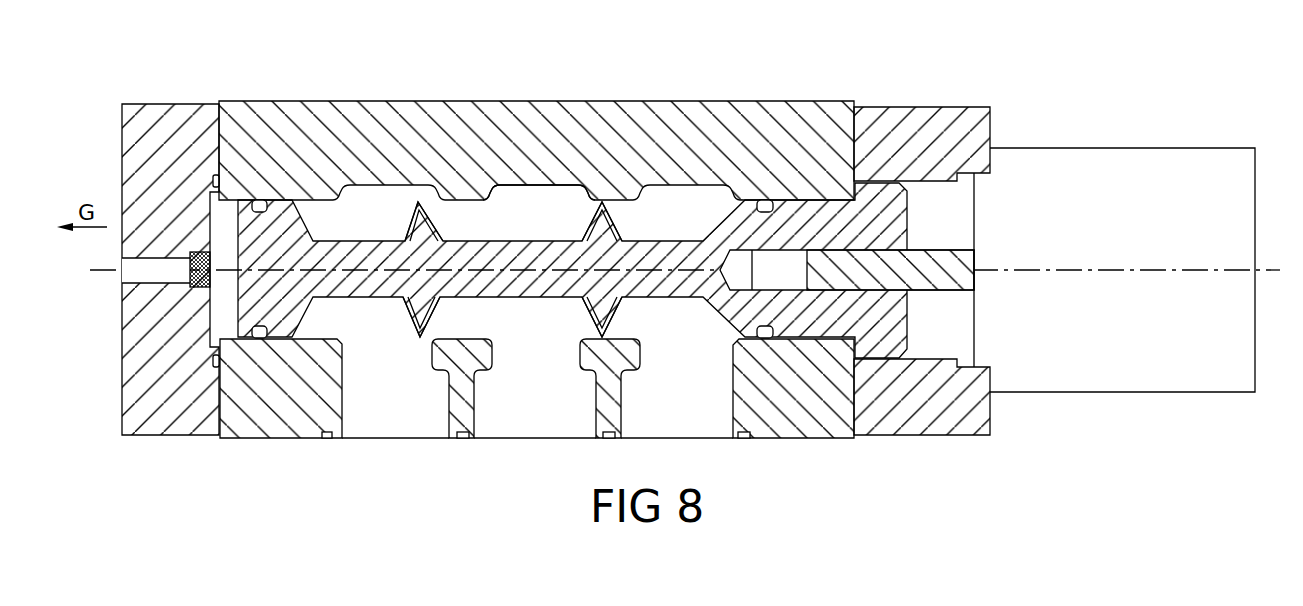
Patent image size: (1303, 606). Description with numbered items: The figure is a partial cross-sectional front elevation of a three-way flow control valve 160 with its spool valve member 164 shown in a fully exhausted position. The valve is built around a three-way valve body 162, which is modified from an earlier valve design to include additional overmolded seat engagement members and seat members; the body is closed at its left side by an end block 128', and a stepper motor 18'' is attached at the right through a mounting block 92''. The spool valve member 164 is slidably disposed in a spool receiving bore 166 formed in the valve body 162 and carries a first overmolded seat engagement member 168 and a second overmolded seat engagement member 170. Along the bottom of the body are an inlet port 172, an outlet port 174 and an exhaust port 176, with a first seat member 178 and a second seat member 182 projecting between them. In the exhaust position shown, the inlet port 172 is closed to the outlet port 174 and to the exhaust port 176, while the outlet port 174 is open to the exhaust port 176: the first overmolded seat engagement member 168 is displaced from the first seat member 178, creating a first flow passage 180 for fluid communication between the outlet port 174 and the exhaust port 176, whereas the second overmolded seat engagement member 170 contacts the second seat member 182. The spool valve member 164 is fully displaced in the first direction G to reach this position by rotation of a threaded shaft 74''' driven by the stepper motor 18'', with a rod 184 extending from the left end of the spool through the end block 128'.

The flow control valve 160 is at (975, 86).
The end block / housing end 128' is at (158, 290).
The rod / shaft 184 is at (107, 274).
The 3-way valve body 162 is at (348, 118).
The spool receiving bore 166 is at (522, 198).
The spool valve member 164 is at (500, 288).
The first overmolded seat engagement member 168 is at (428, 204).
The second overmolded seat engagement member 170 is at (608, 204).
The first flow passage 180 is at (433, 338).
The stepper motor shaft 74''' is at (862, 372).
The first seat member 178 is at (484, 356).
The second seat member 182 is at (633, 352).
The exhaust port 176 is at (407, 410).
The outlet port 174 is at (548, 411).
The inlet port 172 is at (661, 406).
The motor mount block 92'' is at (916, 291).
The stepper motor 18'' is at (1118, 247).